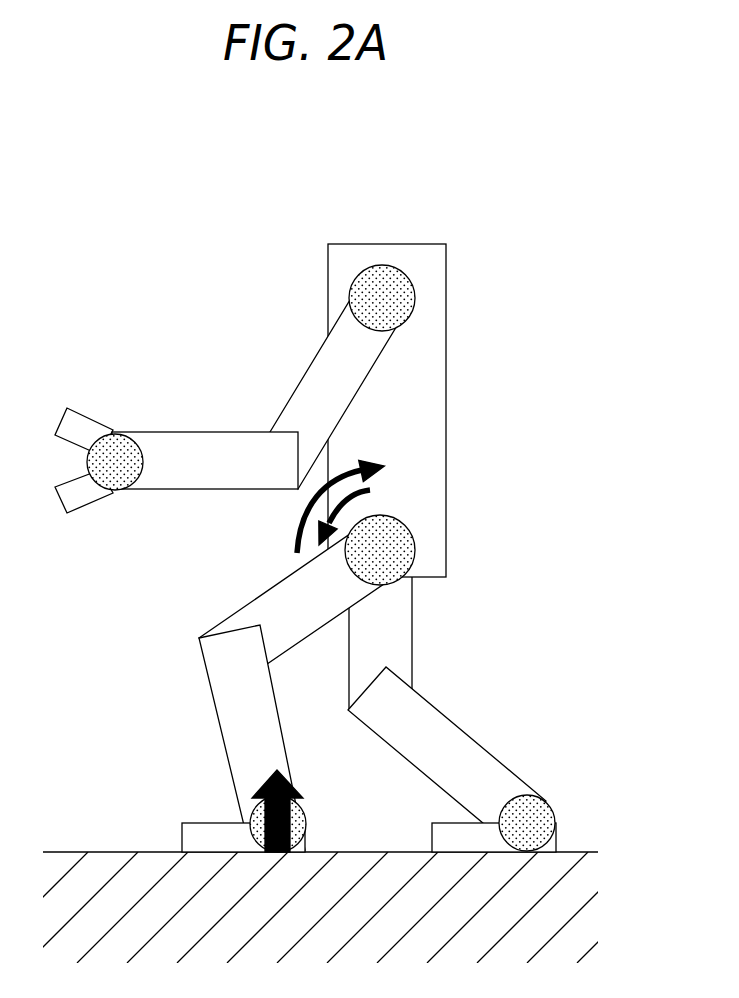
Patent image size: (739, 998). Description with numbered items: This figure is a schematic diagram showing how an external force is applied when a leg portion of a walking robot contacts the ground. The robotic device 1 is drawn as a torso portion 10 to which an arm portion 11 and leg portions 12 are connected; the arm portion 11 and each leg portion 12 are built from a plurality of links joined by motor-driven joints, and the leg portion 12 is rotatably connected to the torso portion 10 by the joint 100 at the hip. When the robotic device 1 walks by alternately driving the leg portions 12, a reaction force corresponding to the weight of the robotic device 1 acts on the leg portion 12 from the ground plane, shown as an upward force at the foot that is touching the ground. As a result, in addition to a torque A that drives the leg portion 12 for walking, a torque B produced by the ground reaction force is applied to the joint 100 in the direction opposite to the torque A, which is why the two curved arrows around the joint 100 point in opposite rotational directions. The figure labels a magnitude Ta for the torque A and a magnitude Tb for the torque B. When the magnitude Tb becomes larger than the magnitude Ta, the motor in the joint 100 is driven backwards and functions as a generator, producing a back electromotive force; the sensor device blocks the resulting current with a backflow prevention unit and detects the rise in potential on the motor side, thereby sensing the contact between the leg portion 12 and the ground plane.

The robotic device 1 is at (518, 215).
The torso portion 10 is at (386, 244).
The arm portion 11 is at (238, 402).
The leg portion 12 is at (182, 642).
The joint 100 is at (417, 542).
The magnitude of torque A Ta is at (363, 498).
The magnitude of torque B Tb is at (300, 515).
The torque A is at (347, 506).
The torque B is at (322, 524).